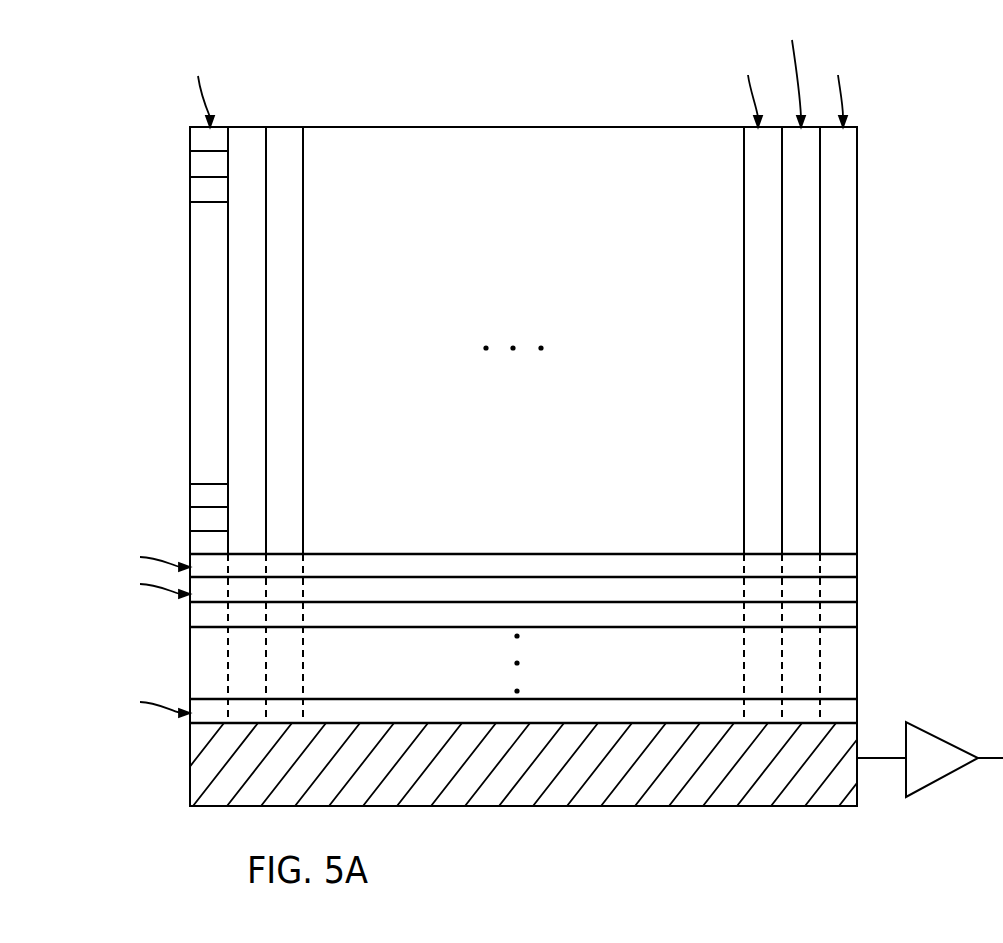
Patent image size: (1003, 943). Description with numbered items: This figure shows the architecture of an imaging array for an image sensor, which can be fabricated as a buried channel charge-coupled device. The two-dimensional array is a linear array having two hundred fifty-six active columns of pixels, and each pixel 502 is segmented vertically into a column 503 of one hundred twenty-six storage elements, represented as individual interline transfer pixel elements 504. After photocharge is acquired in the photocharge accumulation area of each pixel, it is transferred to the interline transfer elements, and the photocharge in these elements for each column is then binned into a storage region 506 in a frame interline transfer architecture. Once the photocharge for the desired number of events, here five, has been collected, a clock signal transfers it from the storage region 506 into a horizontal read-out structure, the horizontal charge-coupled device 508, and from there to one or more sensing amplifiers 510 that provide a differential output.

The pixel 502 is at (867, 46).
The column 503 is at (180, 143).
The interline transfer pixel element 504 is at (196, 290).
The storage region 506 is at (870, 553).
The horizontal charge-coupled device 508 is at (499, 818).
The sensing amplifier 510 is at (928, 797).